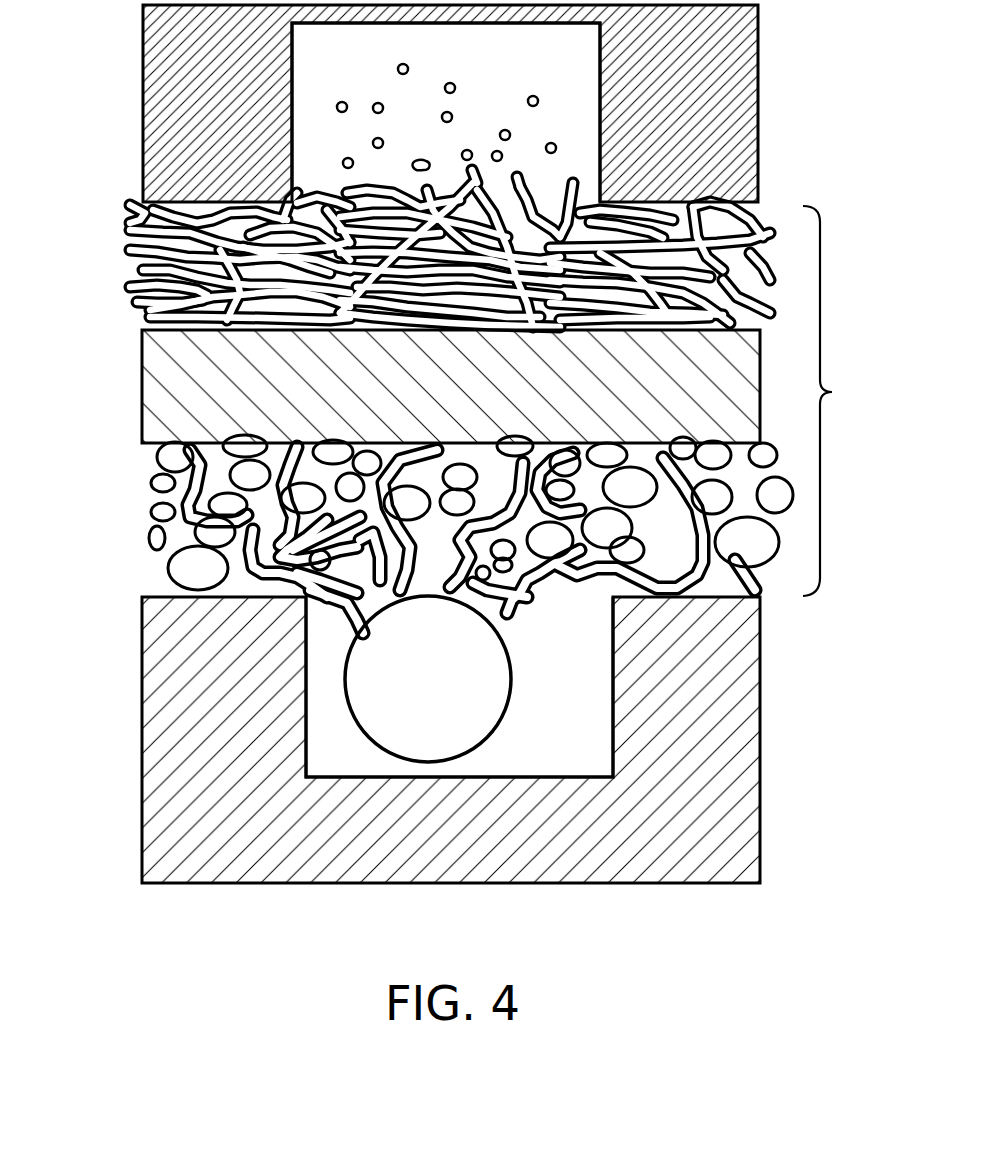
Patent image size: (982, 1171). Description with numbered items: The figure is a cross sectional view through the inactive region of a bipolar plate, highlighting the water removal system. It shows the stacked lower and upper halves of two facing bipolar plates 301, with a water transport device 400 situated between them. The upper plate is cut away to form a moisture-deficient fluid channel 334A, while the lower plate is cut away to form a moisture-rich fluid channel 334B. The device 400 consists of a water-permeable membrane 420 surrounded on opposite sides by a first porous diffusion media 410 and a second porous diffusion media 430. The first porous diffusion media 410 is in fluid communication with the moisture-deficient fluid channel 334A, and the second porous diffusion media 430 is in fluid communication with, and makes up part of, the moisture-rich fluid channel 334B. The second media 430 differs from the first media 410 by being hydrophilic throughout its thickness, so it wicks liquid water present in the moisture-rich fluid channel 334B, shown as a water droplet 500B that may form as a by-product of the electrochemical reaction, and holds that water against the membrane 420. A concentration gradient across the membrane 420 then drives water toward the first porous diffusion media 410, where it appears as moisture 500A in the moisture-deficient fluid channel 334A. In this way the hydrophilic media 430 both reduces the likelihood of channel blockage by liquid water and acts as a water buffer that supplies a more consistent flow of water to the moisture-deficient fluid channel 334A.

The bipolar plate 301 is at (758, 98).
The moisture-deficient fluid channel 334A is at (541, 84).
The moisture-rich fluid channel 334B is at (600, 670).
The water transport device 400 is at (854, 401).
The first porous diffusion media 410 is at (752, 236).
The water-permeable membrane 420 is at (748, 423).
The second porous diffusion media 430 is at (700, 567).
The water 500A is at (372, 143).
The water droplet 500B is at (467, 709).